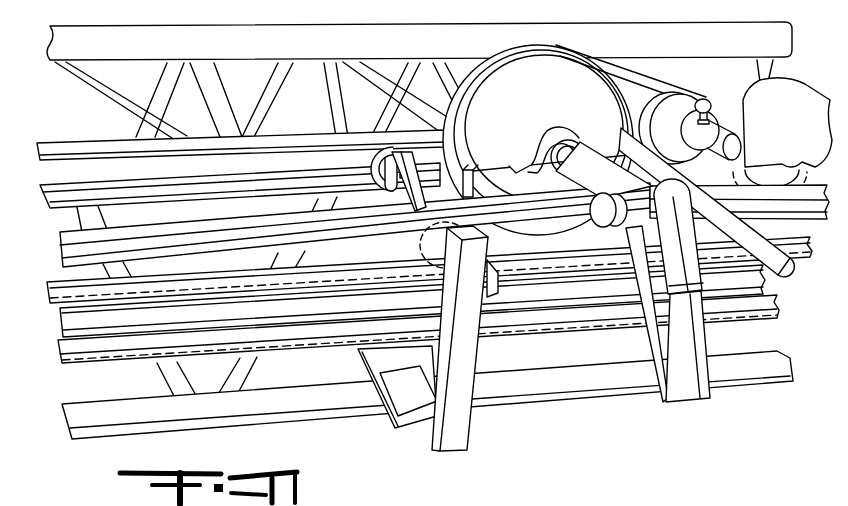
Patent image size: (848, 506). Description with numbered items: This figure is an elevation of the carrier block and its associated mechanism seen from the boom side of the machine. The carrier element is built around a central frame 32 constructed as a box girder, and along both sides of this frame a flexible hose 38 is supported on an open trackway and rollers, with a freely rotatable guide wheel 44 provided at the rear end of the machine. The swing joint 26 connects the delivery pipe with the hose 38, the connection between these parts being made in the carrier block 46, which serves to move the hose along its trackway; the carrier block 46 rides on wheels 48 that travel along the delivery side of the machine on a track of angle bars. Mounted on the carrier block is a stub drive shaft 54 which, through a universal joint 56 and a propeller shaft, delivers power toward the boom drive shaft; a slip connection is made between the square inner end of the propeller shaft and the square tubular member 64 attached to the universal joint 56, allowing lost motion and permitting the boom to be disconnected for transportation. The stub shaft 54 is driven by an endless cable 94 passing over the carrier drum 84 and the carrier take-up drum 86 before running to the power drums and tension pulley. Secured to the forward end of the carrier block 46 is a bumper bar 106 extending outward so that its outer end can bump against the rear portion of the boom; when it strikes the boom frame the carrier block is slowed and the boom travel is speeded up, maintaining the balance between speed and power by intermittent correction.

The swing joint 26 is at (787, 126).
The central frame 32 is at (344, 48).
The flexible hose 38 is at (47, 298).
The guide wheel 44 is at (473, 505).
The carrier block 46 is at (425, 148).
The wheels 48 is at (368, 172).
The stub drive shaft 54 is at (584, 165).
The universal joint 56 is at (686, 230).
The square tubular member 64 is at (690, 340).
The carrier drum 84 is at (519, 48).
The carrier take-up drum 86 is at (709, 104).
The cable 94 is at (620, 63).
The bumper bar 106 is at (746, 233).